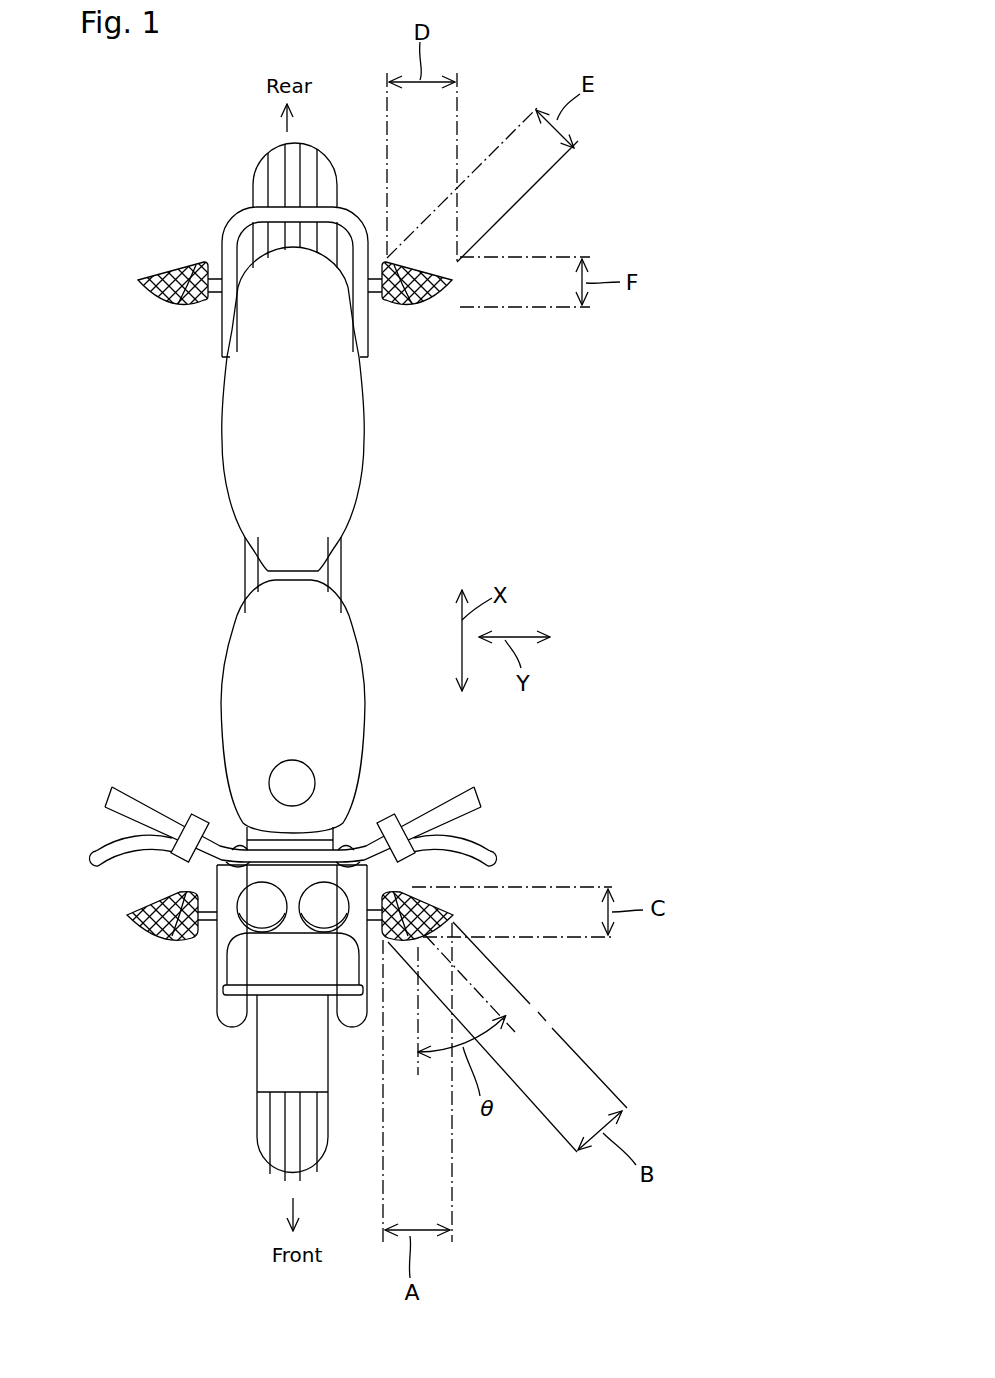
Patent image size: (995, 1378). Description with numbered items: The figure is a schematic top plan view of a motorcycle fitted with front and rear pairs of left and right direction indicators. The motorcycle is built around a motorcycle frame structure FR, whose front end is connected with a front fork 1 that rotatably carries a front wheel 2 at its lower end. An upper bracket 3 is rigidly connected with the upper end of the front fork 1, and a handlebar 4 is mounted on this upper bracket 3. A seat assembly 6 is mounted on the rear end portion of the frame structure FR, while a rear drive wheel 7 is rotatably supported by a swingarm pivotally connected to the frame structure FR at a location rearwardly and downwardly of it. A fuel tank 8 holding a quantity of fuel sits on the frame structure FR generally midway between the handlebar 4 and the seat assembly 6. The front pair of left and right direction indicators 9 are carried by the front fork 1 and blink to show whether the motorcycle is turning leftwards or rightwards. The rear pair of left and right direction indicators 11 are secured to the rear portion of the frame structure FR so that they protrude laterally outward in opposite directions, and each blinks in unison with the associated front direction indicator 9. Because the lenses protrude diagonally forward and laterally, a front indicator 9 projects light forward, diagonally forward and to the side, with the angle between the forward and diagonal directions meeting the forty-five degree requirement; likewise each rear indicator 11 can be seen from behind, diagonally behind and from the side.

The front fork 1 is at (227, 1007).
The front wheel 2 is at (263, 1143).
The upper bracket 3 is at (257, 875).
The handlebar 4 is at (117, 803).
The seat assembly 6 is at (237, 453).
The rear drive wheel 7 is at (320, 175).
The fuel tank 8 is at (345, 650).
The front direction indicators 9 is at (145, 932).
The rear direction indicators 11 is at (165, 262).
The motorcycle frame structure FR is at (255, 575).